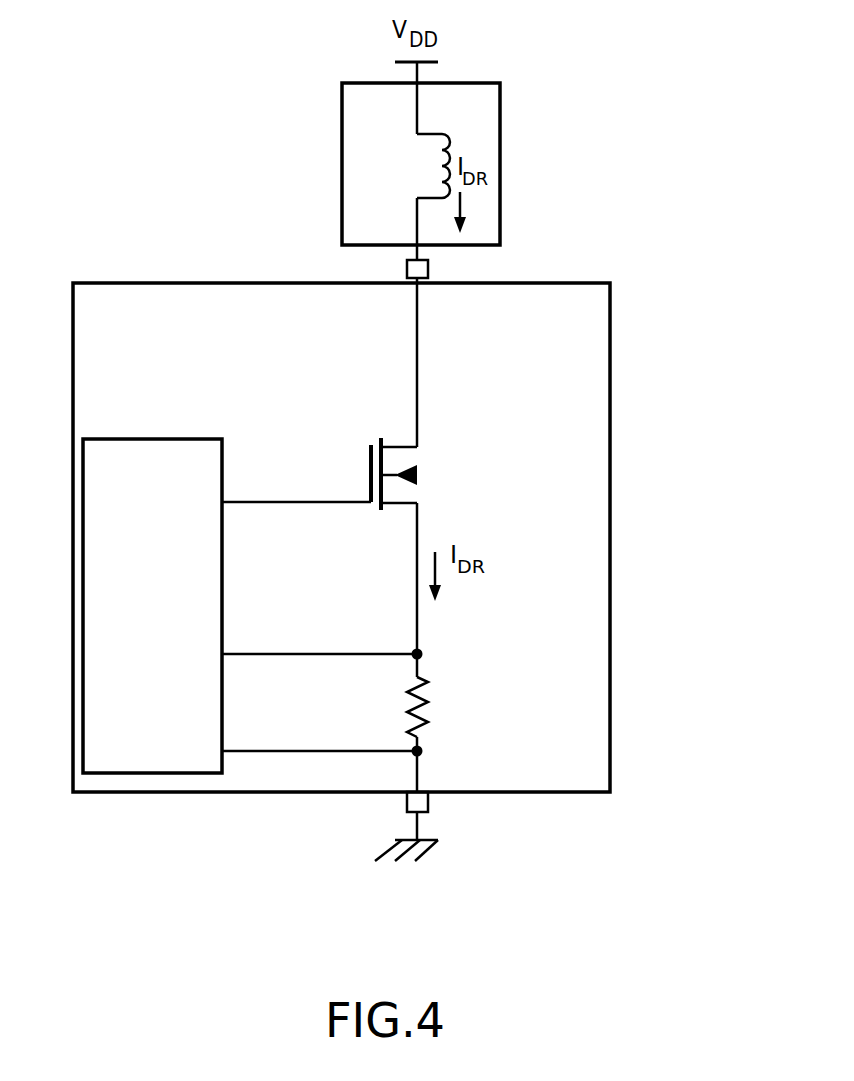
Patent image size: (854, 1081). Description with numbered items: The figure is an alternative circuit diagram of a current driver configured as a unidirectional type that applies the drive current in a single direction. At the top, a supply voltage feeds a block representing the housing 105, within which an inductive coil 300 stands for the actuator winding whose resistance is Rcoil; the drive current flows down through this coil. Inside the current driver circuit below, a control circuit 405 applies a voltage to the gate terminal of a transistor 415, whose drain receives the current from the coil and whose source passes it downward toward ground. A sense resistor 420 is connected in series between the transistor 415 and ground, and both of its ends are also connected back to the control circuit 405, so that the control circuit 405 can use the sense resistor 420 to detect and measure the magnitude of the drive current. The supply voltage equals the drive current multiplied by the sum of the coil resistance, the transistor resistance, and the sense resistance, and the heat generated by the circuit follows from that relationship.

The housing 105 is at (500, 100).
The inductor 300 is at (442, 134).
The control circuit 405 is at (138, 439).
The transistor 415 is at (371, 460).
The sense resistor 420 is at (422, 707).